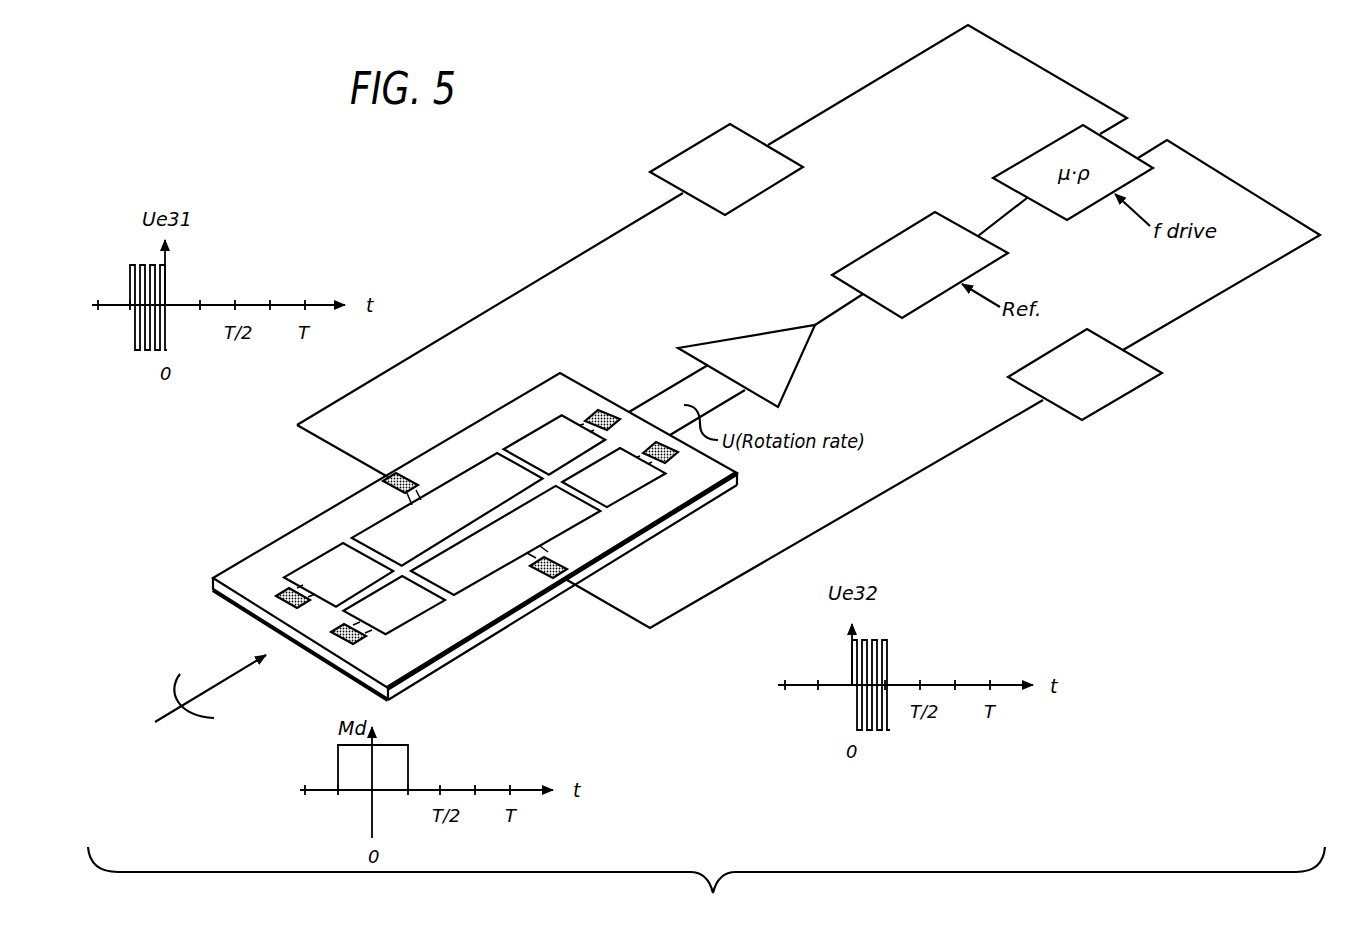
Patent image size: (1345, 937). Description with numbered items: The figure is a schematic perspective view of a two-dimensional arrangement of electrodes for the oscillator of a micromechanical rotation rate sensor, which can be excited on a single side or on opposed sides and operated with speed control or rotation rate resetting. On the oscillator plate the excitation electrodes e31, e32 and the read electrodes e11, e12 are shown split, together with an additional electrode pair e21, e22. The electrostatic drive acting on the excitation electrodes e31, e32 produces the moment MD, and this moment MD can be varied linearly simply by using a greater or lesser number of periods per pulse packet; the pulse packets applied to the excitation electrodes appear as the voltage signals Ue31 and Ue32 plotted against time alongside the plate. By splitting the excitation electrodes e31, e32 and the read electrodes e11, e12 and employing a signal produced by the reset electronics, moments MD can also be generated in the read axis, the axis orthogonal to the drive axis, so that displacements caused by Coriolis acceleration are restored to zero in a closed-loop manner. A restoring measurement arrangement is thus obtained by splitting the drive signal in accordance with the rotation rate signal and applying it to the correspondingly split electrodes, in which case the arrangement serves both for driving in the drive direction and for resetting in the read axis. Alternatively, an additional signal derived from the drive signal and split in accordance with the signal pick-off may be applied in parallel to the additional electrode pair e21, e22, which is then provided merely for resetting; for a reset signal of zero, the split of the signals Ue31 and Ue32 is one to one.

The read electrode e11 is at (536, 452).
The read electrode e12 is at (628, 482).
The additional electrode e21 is at (315, 574).
The additional electrode e22 is at (412, 610).
The excitation electrode e31 is at (422, 491).
The excitation electrode e32 is at (538, 563).
The contact pad / voltage of electrode e31 Ue31 is at (360, 478).
The contact pad / voltage of electrode e32 Ue32 is at (567, 599).
The moment MD is at (210, 696).